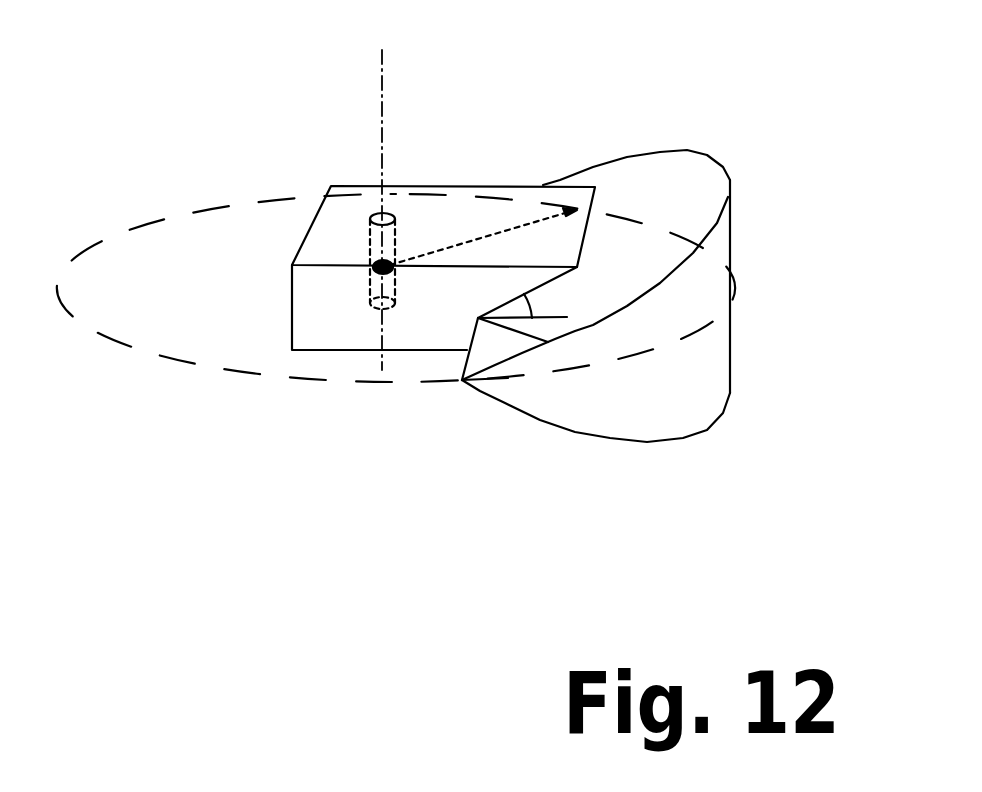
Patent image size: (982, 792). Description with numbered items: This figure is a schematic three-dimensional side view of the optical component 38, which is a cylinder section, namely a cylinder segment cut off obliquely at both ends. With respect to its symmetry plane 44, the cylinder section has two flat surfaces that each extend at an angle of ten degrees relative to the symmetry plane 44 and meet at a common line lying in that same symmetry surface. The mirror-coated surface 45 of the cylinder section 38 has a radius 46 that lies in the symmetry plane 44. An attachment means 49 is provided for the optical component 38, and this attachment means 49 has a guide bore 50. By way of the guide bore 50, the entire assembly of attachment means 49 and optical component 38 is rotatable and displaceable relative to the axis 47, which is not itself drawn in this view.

The optical component 38 is at (640, 422).
The symmetry plane 44 is at (170, 305).
The mirror-coated surface 45 is at (731, 255).
The radius 46 is at (458, 247).
The axis 47 is at (383, 88).
The attachment means 49 is at (417, 328).
The guide bore 50 is at (378, 213).